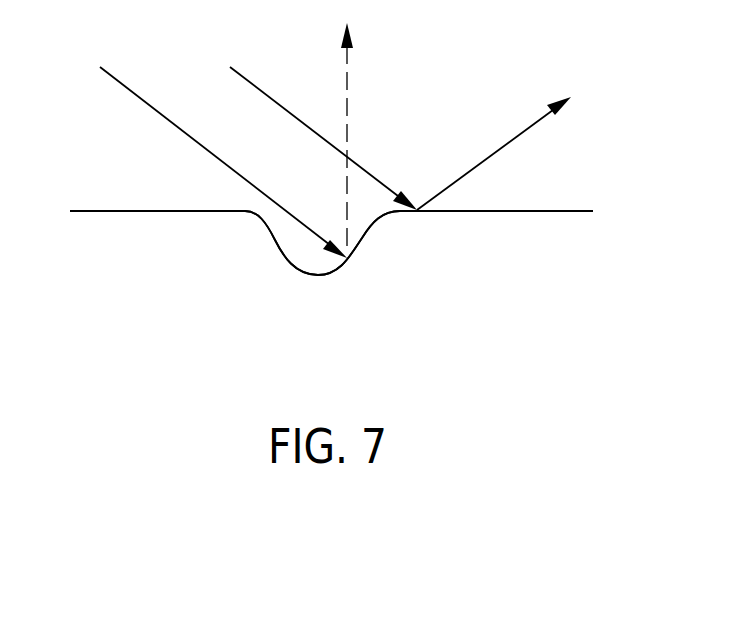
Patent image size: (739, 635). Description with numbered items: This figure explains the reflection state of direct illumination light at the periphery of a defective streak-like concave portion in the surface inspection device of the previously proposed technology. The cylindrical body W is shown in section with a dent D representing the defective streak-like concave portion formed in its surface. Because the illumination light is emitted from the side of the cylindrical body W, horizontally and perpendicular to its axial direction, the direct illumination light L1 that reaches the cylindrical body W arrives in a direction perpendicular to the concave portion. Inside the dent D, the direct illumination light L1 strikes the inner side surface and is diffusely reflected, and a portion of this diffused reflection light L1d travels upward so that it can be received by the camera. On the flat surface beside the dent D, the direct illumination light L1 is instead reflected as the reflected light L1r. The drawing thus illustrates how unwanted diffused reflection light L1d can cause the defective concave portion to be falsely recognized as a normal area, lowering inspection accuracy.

The cylindrical body W is at (125, 242).
The groove (dent Db) formed in workpiece D is at (318, 277).
The direct illumination light L1 is at (130, 87).
The diffused reflection light L1d is at (350, 88).
The reflected first laser beam L1r is at (532, 128).